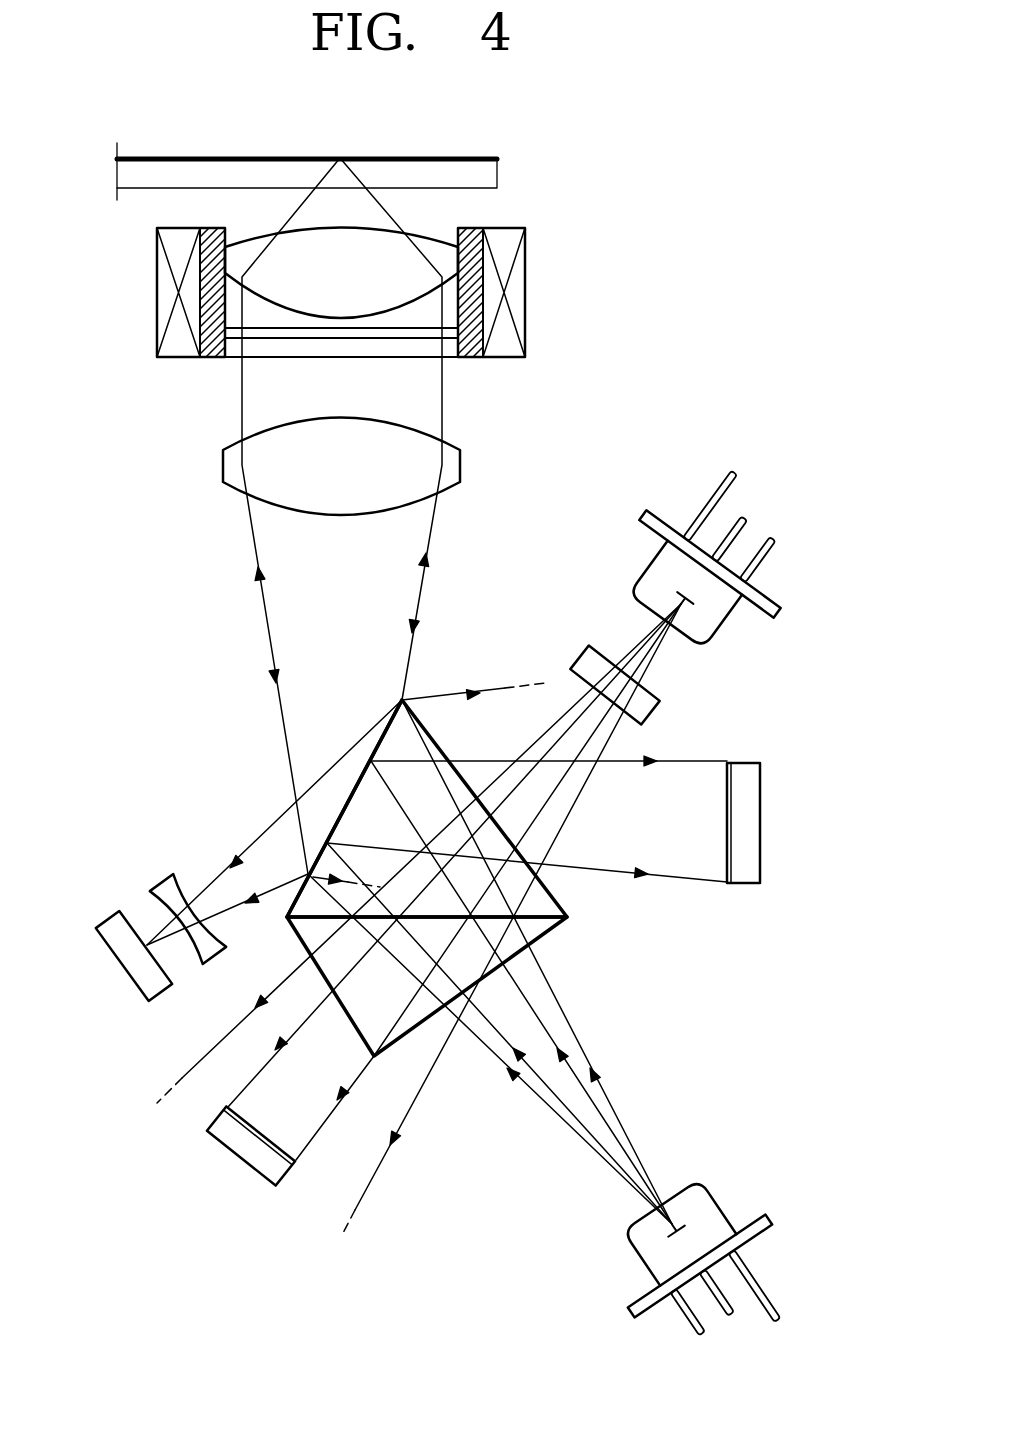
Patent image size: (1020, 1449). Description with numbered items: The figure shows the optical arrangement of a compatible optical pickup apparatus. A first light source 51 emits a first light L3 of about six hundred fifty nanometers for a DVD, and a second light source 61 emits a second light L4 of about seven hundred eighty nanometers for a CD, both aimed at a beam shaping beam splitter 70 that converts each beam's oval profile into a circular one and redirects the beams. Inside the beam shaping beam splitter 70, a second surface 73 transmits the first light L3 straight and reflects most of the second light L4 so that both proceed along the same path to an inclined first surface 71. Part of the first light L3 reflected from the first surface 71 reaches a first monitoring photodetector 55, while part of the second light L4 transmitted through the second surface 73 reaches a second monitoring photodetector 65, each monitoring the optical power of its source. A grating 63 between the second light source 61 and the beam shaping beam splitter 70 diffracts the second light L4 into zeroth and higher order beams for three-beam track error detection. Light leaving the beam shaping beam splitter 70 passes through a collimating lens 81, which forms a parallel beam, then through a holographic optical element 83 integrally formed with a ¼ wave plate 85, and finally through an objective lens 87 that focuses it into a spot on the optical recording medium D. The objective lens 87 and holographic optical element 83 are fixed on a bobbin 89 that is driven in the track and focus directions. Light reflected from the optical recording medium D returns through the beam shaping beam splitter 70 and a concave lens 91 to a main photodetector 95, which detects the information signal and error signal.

The optical recording medium D is at (487, 177).
The first light source 51 is at (713, 1212).
The first monitoring photodetector 55 is at (747, 825).
The second light source 61 is at (722, 618).
The grating 63 is at (585, 655).
The second monitoring photodetector 65 is at (253, 1163).
The beam shaping beam splitter 70 is at (506, 878).
The first surface 71 is at (368, 753).
The second surface 73 is at (565, 903).
The collimating lens 81 is at (225, 465).
The holographic optical element 83 is at (237, 350).
The ¼ wave plate 85 is at (233, 330).
The objective lens 87 is at (252, 244).
The bobbin 89 is at (475, 360).
The concave lens 91 is at (162, 887).
The main photodetector 95 is at (108, 927).
The first light L3 is at (567, 1126).
The second light L4 is at (633, 642).